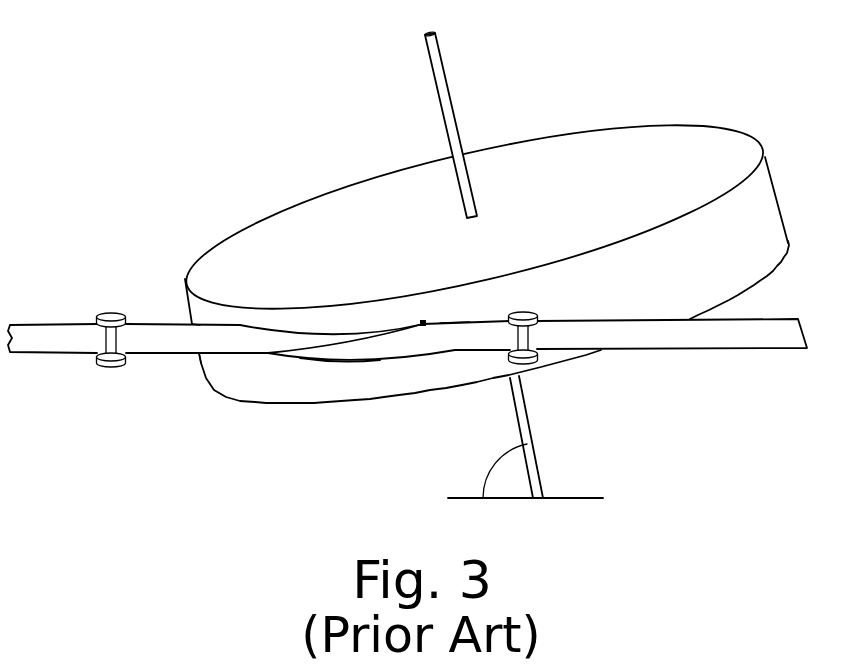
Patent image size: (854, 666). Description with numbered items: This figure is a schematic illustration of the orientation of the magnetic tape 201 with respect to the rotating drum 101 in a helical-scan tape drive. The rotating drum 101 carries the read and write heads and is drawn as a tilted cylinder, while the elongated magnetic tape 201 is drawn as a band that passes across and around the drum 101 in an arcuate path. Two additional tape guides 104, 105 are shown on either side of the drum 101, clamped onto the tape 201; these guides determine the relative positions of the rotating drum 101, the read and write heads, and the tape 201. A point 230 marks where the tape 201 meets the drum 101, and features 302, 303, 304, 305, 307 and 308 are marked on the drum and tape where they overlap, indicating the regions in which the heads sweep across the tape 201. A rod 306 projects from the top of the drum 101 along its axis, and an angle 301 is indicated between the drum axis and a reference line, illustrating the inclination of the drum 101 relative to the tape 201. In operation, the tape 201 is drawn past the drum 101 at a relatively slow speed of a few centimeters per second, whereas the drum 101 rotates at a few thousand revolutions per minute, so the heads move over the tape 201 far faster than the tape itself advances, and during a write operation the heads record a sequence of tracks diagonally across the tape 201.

The rotating drum 101 is at (707, 147).
The magnetic tape 201 is at (763, 338).
The tape guide 104 is at (110, 312).
The tape guide 105 is at (537, 318).
The rod 306 is at (440, 52).
The tilt angle 301 is at (500, 484).
The contact point 230 is at (421, 321).
The lower side line 302 is at (242, 354).
The lower edge segment 303 is at (453, 351).
The upper edge segment 304 is at (452, 326).
The upper side line 305 is at (240, 324).
The lower gap line 307 is at (337, 360).
The upper gap line 308 is at (366, 338).